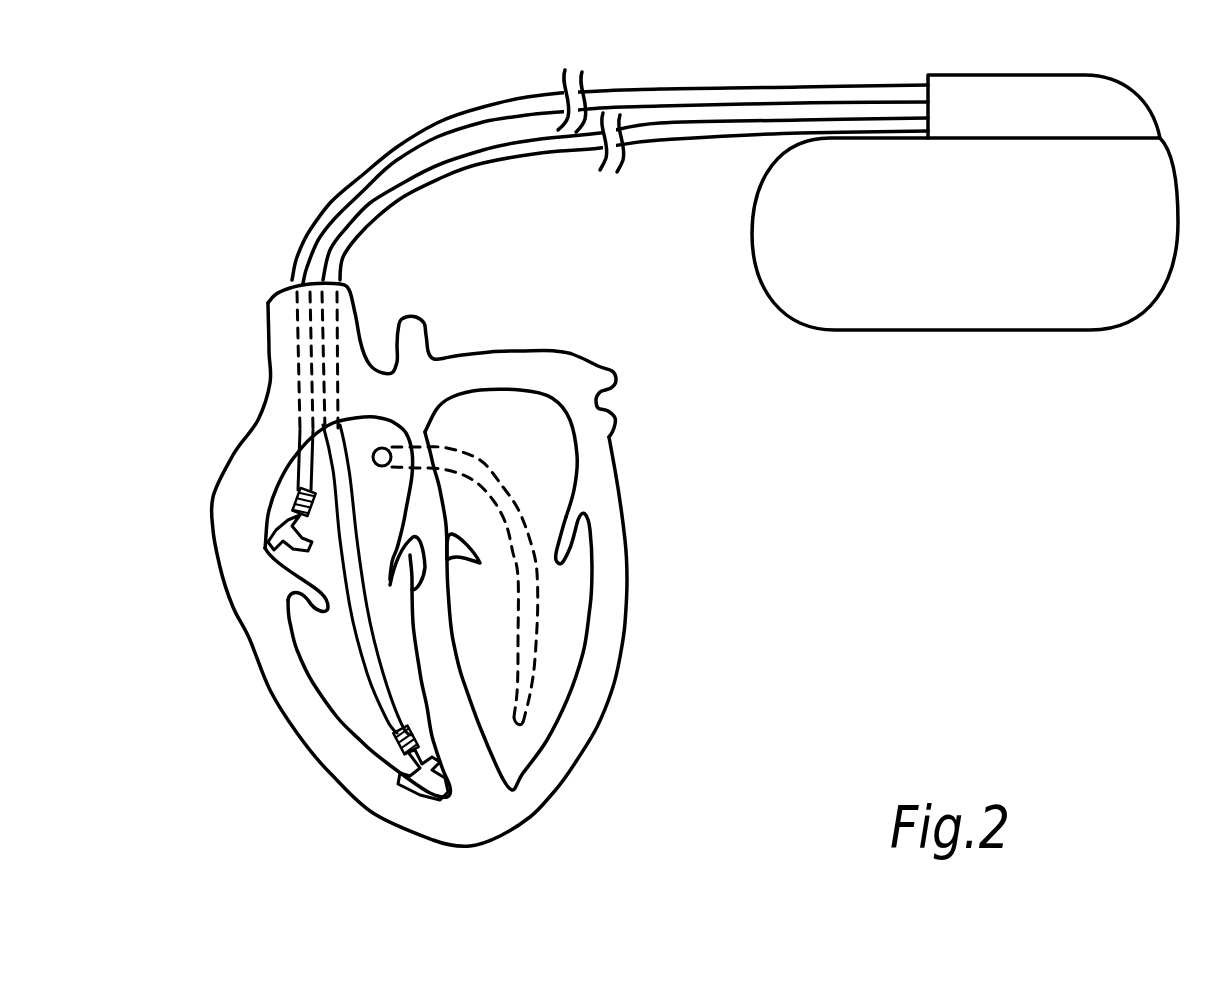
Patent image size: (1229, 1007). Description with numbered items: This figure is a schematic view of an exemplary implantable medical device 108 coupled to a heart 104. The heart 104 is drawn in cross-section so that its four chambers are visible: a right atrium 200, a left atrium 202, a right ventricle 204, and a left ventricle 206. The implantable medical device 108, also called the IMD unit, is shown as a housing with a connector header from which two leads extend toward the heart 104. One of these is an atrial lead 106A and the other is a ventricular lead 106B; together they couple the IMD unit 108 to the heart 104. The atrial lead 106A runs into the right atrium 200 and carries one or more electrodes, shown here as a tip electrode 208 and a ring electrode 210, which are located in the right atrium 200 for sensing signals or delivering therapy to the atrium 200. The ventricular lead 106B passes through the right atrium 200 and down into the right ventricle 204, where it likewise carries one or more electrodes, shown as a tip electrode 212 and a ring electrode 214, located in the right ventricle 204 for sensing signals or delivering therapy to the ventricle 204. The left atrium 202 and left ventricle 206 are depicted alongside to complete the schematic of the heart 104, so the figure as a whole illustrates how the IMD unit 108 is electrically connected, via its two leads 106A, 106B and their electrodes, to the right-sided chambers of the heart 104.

The heart 104 is at (620, 607).
The atrial lead 106A is at (477, 103).
The ventricular lead 106B is at (497, 160).
The implantable medical device 108 is at (1118, 70).
The right atrium 200 is at (310, 565).
The left atrium 202 is at (545, 450).
The right ventricle 204 is at (332, 652).
The left ventricle 206 is at (555, 676).
The tip electrode 208 is at (278, 543).
The ring electrode 210 is at (300, 500).
The tip electrode 212 is at (425, 790).
The ring electrode 214 is at (397, 748).